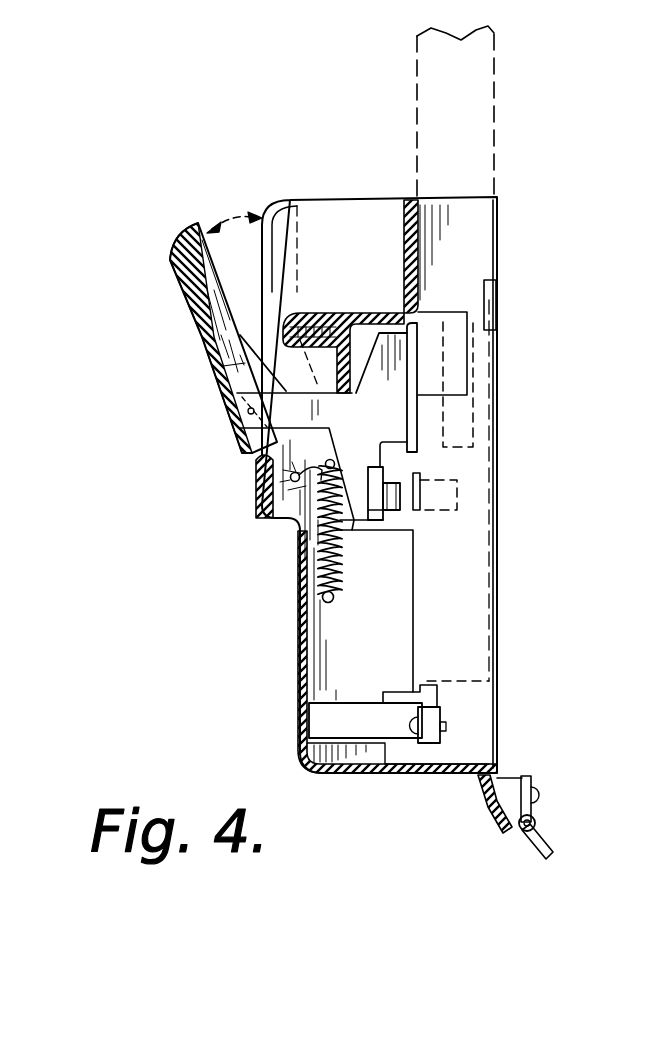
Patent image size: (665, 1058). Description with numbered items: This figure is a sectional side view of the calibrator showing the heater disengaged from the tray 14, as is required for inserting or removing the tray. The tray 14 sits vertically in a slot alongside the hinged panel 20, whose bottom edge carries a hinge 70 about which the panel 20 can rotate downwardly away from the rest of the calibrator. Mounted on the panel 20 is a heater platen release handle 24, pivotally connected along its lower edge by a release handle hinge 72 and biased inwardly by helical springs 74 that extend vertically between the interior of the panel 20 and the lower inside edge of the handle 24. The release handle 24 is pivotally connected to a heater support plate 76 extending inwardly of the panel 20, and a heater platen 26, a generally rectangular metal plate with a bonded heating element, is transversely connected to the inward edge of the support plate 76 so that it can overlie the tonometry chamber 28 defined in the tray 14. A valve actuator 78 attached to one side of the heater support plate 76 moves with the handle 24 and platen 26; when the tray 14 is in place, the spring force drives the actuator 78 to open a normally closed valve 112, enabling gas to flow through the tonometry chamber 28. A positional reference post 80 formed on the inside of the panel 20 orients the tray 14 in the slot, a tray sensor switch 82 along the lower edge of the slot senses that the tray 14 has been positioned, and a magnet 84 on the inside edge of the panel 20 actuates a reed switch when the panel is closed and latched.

The tray 14 is at (483, 123).
The hinged panel 20 is at (506, 193).
The heater platen release handle 24 is at (223, 398).
The heater platen 26 is at (417, 447).
The tonometry chamber 28 is at (462, 430).
The hinge 70 is at (543, 830).
The release handle hinge 72 is at (292, 481).
The helical springs 74 is at (302, 548).
The heater support plate 76 is at (385, 440).
The valve actuator 78 is at (398, 510).
The positional reference post 80 is at (430, 323).
The tray sensor switch 82 is at (440, 698).
The magnet 84 is at (492, 310).
The valve 112 is at (456, 498).